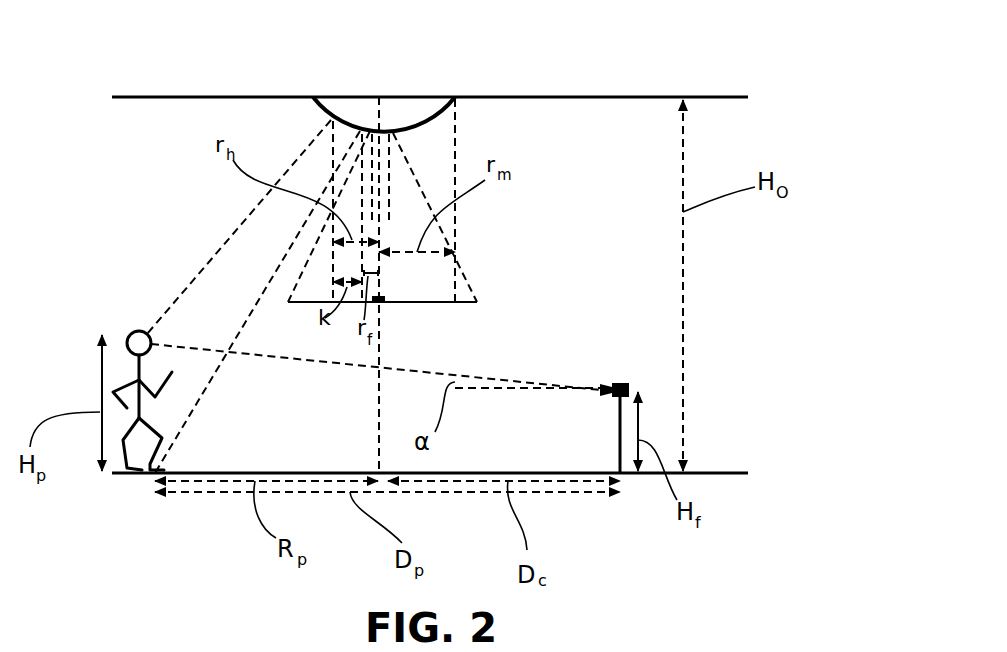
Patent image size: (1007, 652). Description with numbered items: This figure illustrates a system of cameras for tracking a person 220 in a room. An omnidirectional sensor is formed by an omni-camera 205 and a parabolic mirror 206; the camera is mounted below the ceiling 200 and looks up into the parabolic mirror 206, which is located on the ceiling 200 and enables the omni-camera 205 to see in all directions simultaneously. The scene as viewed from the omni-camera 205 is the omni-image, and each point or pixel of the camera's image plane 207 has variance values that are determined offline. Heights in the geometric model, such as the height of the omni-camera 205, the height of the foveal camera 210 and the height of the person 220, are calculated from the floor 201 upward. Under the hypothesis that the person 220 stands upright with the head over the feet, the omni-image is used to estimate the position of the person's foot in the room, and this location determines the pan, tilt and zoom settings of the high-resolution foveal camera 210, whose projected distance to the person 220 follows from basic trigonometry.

The ceiling 200 is at (725, 97).
The floor 201 is at (725, 473).
The omni-camera 205 is at (383, 303).
The parabolic mirror 206 is at (431, 118).
The image plane 207 is at (475, 302).
The foveal camera 210 is at (629, 383).
The person 220 is at (130, 331).